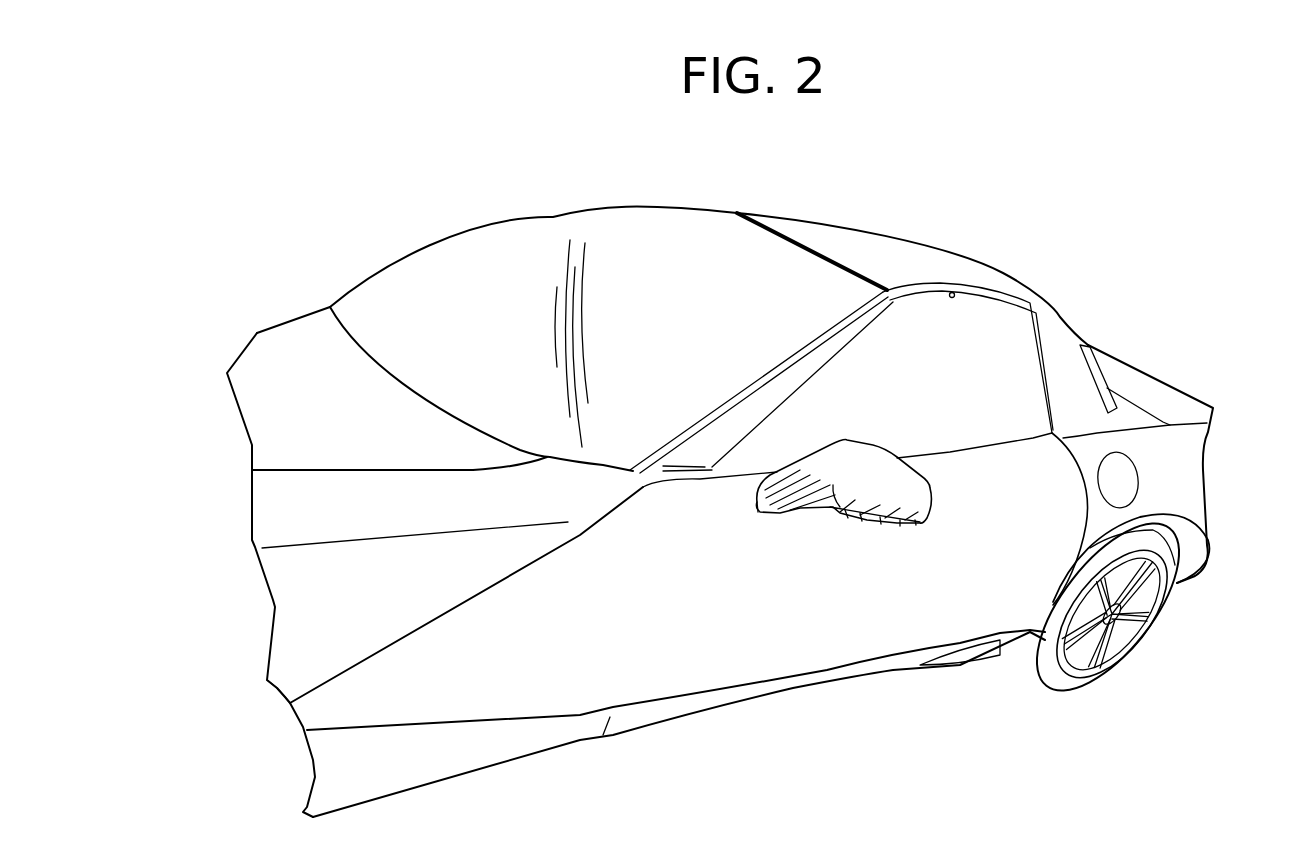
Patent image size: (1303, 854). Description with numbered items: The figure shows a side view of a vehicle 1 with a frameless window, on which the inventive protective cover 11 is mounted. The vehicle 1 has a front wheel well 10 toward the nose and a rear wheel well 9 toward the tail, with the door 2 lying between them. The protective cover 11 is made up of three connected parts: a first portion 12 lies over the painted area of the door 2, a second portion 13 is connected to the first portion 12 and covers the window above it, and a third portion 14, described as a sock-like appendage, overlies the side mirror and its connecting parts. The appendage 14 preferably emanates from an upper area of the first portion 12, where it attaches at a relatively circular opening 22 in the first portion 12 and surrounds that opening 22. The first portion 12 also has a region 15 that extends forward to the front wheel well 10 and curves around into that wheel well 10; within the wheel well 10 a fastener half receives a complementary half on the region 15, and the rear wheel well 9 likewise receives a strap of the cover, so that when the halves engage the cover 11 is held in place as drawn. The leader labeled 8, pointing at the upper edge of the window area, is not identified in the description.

The vehicle 1 is at (323, 388).
The door 2 is at (645, 480).
The window frame / A-pillar 8 is at (784, 372).
The rear wheel well 9 is at (1142, 520).
The front wheel well 10 is at (277, 690).
The protective cover 11 is at (778, 697).
The first portion 12 is at (745, 627).
The second portion 13 is at (945, 392).
The third portion 14 is at (918, 525).
The region 15 is at (470, 663).
The circular opening 22 is at (763, 515).